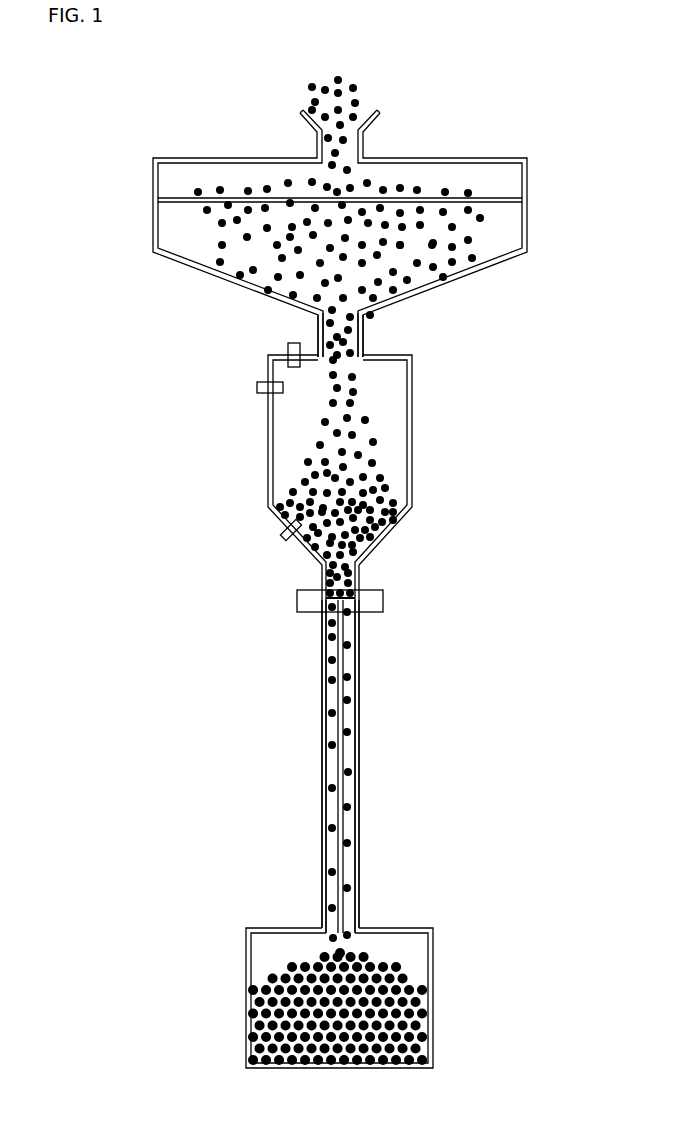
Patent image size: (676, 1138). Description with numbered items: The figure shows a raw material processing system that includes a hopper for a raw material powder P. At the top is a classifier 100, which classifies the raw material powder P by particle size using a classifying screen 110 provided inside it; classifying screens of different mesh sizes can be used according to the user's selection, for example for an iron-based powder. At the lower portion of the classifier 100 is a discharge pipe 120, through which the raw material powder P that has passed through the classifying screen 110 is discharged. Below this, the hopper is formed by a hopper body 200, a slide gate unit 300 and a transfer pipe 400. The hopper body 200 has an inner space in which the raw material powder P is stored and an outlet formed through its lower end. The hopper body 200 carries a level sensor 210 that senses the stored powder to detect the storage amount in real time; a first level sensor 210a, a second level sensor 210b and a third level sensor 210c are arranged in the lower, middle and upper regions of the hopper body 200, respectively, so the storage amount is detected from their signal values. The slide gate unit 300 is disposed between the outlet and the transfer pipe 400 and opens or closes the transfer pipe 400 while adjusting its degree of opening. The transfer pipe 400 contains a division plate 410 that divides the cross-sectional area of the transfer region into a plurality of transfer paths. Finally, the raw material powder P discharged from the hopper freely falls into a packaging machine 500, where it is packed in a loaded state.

The classifier 100 is at (220, 158).
The classifying screen 110 is at (488, 198).
The discharge pipe 120 is at (364, 333).
The raw material powder P is at (355, 103).
The hopper body 200 is at (412, 418).
The level sensor 210 is at (183, 450).
The first level sensor 210a is at (228, 546).
The second level sensor 210b is at (257, 388).
The third level sensor 210c is at (288, 355).
The slide gate unit 300 is at (383, 600).
The transfer pipe 400 is at (359, 712).
The division plate 410 is at (343, 760).
The packaging machine 500 is at (433, 1002).